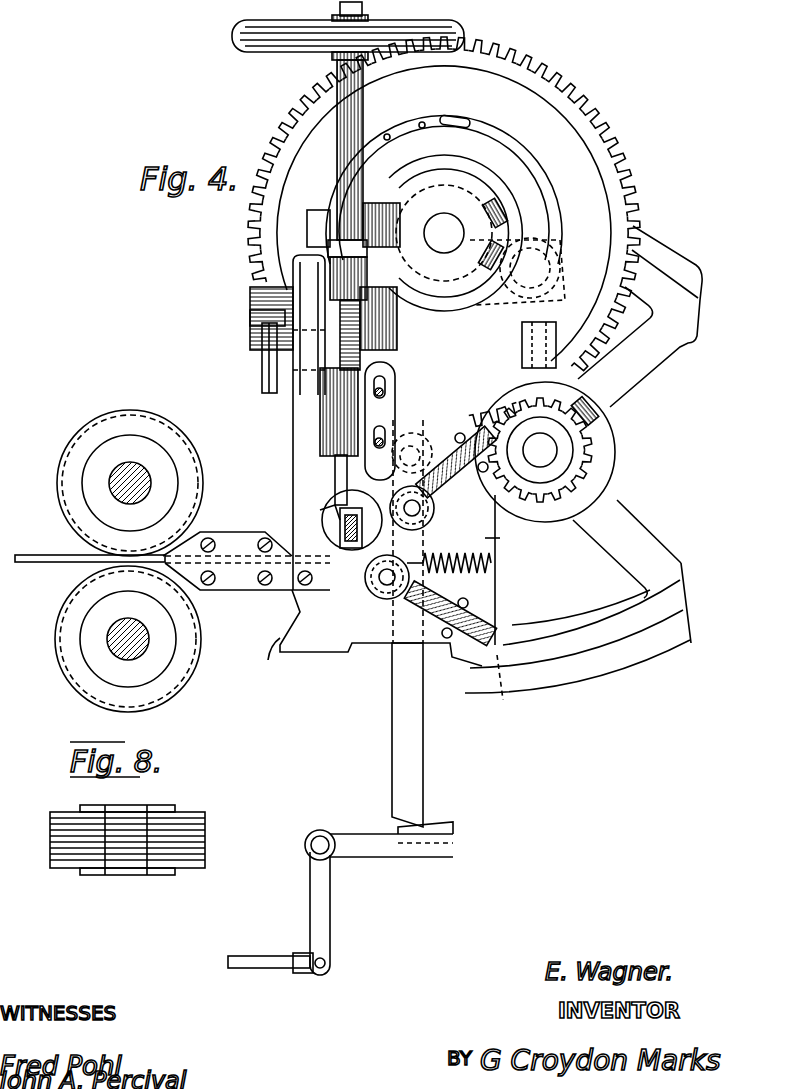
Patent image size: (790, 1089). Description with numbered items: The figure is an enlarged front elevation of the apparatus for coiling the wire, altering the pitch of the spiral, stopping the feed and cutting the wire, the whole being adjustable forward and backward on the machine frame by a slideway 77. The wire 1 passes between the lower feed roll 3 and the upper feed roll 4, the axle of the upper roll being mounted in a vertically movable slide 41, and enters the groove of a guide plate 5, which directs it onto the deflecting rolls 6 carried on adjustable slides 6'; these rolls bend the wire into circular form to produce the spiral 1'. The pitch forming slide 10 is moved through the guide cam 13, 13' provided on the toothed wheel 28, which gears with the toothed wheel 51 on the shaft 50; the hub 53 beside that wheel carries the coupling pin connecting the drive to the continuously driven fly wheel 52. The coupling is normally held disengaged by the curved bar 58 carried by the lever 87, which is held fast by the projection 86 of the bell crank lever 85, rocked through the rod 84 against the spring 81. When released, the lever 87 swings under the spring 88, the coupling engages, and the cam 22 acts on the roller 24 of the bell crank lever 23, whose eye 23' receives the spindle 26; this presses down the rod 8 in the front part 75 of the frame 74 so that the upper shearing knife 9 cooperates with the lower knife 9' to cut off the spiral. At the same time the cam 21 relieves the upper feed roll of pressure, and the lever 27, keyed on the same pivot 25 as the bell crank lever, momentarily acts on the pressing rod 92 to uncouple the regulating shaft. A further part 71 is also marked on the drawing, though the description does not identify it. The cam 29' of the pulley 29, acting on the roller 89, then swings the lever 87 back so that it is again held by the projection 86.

In FIG. 4, the wire 1 is at (172, 576).
In FIG. 4, the spiral 1' is at (296, 498).
In FIG. 4, the lower feed roll 3 is at (75, 682).
In FIG. 8, the lower feed roll 3 is at (48, 770).
In FIG. 4, the upper feed roll 4 is at (62, 487).
In FIG. 4, the guide plate 5 is at (241, 582).
In FIG. 4, the deflecting rolls 6 is at (410, 555).
In FIG. 4, the slides 6' is at (430, 552).
In FIG. 4, the cutting slide 8 is at (327, 393).
In FIG. 4, the upper shearing knife 9 is at (350, 502).
In FIG. 4, the lower shearing knife 9' is at (395, 481).
In FIG. 4, the pitch forming slide 10 is at (322, 517).
In FIG. 4, the guide cam 13 is at (444, 176).
In FIG. 4, the guide cam portion 13' is at (472, 105).
In FIG. 4, the cam 21 is at (500, 207).
In FIG. 4, the cam 22 is at (498, 222).
In FIG. 4, the bell crank lever 23 is at (362, 199).
In FIG. 4, the eye 23' is at (289, 266).
In FIG. 4, the roller 24 is at (444, 224).
In FIG. 4, the pivot 25 is at (250, 322).
In FIG. 4, the spindle 26 is at (364, 120).
In FIG. 4, the lever 27 is at (444, 308).
In FIG. 4, the toothed wheel 28 is at (616, 157).
In FIG. 4, the pulley 29 is at (457, 229).
In FIG. 4, the cam 29' is at (553, 268).
In FIG. 4, the slide 41 is at (388, 406).
In FIG. 4, the shaft 50 is at (553, 452).
In FIG. 4, the toothed wheel 51 is at (582, 484).
In FIG. 4, the fly wheel 52 is at (650, 657).
In FIG. 4, the hub 53 is at (598, 476).
In FIG. 4, the curved bar 58 is at (597, 412).
In FIG. 4, the pin 71 is at (508, 689).
In FIG. 4, the frame 74 is at (381, 628).
In FIG. 4, the front part of frame 75 is at (333, 420).
In FIG. 4, the slideway 77 is at (273, 661).
In FIG. 4, the spring 81 is at (510, 541).
In FIG. 4, the rod 84 is at (258, 963).
In FIG. 4, the bell crank lever 85 is at (350, 840).
In FIG. 4, the projection 86 is at (445, 826).
In FIG. 4, the lever 87 is at (402, 715).
In FIG. 4, the spring 88 is at (495, 570).
In FIG. 4, the roller 89 is at (560, 246).
In FIG. 4, the pressing rod 92 is at (262, 365).